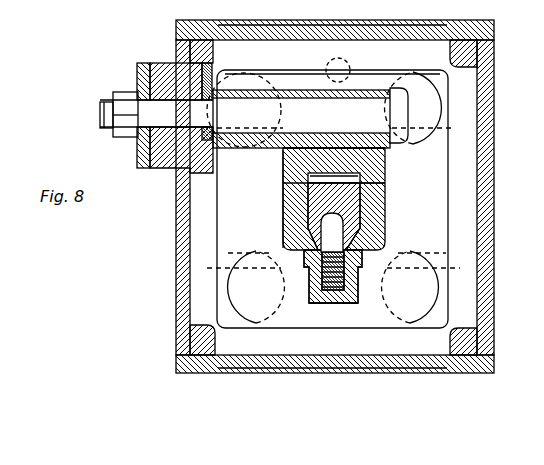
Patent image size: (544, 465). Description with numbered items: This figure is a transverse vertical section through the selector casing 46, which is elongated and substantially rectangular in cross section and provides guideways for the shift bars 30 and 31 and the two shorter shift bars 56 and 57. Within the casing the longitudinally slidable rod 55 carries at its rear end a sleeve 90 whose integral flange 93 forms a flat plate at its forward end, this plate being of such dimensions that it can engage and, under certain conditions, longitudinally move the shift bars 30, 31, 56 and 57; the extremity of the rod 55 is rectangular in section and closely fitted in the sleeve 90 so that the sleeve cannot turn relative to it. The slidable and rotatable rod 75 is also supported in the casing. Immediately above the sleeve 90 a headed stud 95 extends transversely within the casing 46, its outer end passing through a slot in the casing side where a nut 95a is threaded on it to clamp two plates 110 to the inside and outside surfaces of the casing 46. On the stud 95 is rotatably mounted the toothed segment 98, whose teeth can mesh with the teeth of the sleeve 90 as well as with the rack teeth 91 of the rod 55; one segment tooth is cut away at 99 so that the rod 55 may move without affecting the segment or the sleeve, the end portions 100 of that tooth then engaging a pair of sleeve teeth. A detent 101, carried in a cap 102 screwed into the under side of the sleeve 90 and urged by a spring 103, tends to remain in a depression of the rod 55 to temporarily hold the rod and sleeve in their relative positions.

The selector casing 46 is at (466, 23).
The flange 93 is at (440, 190).
The plates 110 is at (147, 63).
The headed stud 95 is at (250, 148).
The nut 95a is at (126, 92).
The shift bar 30 is at (462, 101).
The shift bar 31 is at (206, 291).
The shift bar 56 is at (455, 291).
The rod 75 is at (347, 65).
The shift bar 57 is at (279, 73).
The sleeve 90 is at (387, 231).
The teeth 91 is at (283, 201).
The end portions 100 is at (303, 148).
The cut-away portion 99 is at (336, 148).
The toothed segment 98 is at (386, 174).
The slidable rod 55 is at (385, 203).
The spring 103 is at (320, 284).
The cap 102 is at (326, 304).
The detent 101 is at (330, 235).